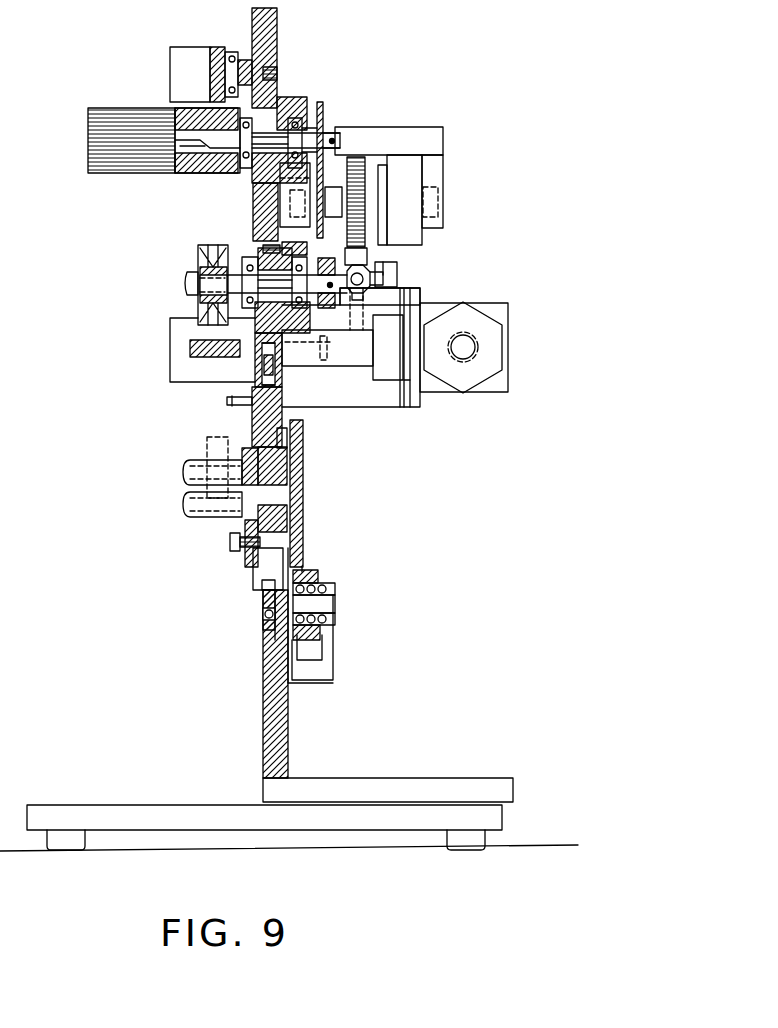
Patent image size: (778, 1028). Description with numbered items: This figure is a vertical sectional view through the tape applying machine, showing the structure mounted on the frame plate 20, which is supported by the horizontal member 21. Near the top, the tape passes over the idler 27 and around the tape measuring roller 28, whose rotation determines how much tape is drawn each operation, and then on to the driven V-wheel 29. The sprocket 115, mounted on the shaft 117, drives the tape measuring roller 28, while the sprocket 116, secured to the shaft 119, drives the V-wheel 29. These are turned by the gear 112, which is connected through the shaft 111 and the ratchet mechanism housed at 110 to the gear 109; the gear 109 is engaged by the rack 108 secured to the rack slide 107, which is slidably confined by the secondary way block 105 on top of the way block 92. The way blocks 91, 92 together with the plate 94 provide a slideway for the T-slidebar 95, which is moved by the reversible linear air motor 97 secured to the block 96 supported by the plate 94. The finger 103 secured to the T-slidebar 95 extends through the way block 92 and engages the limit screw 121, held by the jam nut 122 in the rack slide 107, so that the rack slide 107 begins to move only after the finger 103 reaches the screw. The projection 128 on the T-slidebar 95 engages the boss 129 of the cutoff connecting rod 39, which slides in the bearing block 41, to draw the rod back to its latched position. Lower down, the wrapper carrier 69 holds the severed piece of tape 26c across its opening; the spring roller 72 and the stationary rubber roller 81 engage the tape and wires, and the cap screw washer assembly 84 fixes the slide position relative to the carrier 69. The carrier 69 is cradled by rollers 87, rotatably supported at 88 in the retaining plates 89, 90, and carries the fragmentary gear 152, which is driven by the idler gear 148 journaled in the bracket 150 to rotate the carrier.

The plate 20 is at (268, 722).
The horizontal member 21 is at (395, 780).
The severed piece of tape 26c is at (207, 440).
The idler 27 is at (185, 45).
The tape measuring roller 28 is at (108, 165).
The V-wheel 29 is at (198, 252).
The connecting rod 39 is at (190, 348).
The bearing block 41 is at (180, 340).
The wrapper carrier 69 is at (247, 418).
The spring roller 72 is at (193, 462).
The stationary rubber roller 81 is at (190, 516).
The cap screw washer assembly 84 is at (232, 540).
The roller 87 is at (262, 363).
The roller support 88 is at (255, 375).
The retaining plate 89 is at (262, 600).
The retaining plate 90 is at (272, 637).
The way block 91 is at (363, 395).
The way block 92 is at (393, 307).
The plate 94 is at (415, 397).
The T-slidebar 95 is at (392, 372).
The block 96 is at (508, 307).
The air motor 97 is at (490, 342).
The finger 103 is at (358, 330).
The secondary way block 105 is at (383, 268).
The rack slide 107 is at (380, 283).
The rack 108 is at (367, 253).
The gear 109 is at (356, 160).
The ratchet mechanism housing 110 is at (412, 168).
The shaft 111 is at (343, 200).
The gear 112 is at (323, 195).
The sprocket 115 is at (280, 134).
The sprocket 116 is at (323, 262).
The shaft 117 is at (319, 110).
The shaft 119 is at (277, 282).
The limit screw 121 is at (373, 275).
The jam nut 122 is at (362, 292).
The projection 128 is at (315, 353).
The boss 129 is at (325, 346).
The idler gear 148 is at (313, 571).
The bracket 150 is at (333, 642).
The fragmentary gear 152 is at (296, 448).